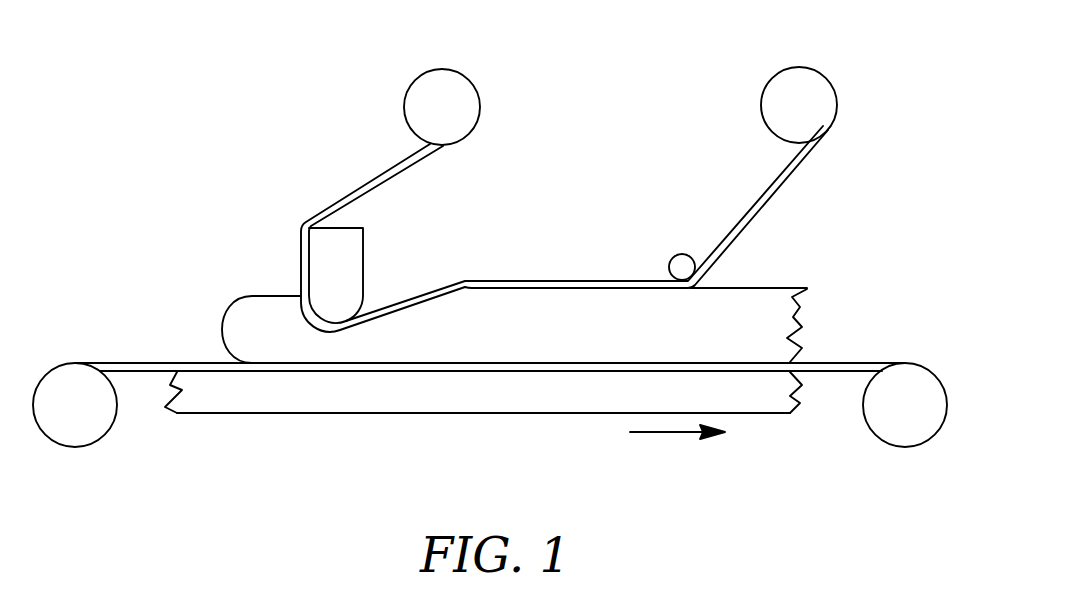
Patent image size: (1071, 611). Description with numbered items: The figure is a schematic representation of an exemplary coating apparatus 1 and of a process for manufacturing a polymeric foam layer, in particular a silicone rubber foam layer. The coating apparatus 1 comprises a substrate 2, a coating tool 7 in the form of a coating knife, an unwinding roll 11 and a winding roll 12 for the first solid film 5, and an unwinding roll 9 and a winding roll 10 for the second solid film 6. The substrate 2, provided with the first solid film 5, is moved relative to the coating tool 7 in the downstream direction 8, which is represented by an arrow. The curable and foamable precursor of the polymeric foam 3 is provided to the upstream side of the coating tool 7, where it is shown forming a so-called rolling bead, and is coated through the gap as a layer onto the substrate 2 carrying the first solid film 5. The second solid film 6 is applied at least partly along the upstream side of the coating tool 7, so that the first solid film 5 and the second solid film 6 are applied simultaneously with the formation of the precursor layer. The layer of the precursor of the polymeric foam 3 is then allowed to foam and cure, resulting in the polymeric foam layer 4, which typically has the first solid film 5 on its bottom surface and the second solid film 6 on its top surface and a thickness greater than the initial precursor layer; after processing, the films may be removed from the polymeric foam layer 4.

The coating apparatus 1 is at (158, 55).
The substrate 2 is at (459, 396).
The precursor of the polymeric foam 3 is at (242, 295).
The polymeric foam layer 4 is at (760, 300).
The first solid film 5 is at (137, 362).
The second solid film 6 is at (570, 283).
The coating tool 7 is at (348, 252).
The downstream direction 8 is at (677, 448).
The unwinding roll 9 is at (480, 108).
The winding roll 10 is at (762, 109).
The unwinding roll 11 is at (82, 448).
The winding roll 12 is at (897, 447).